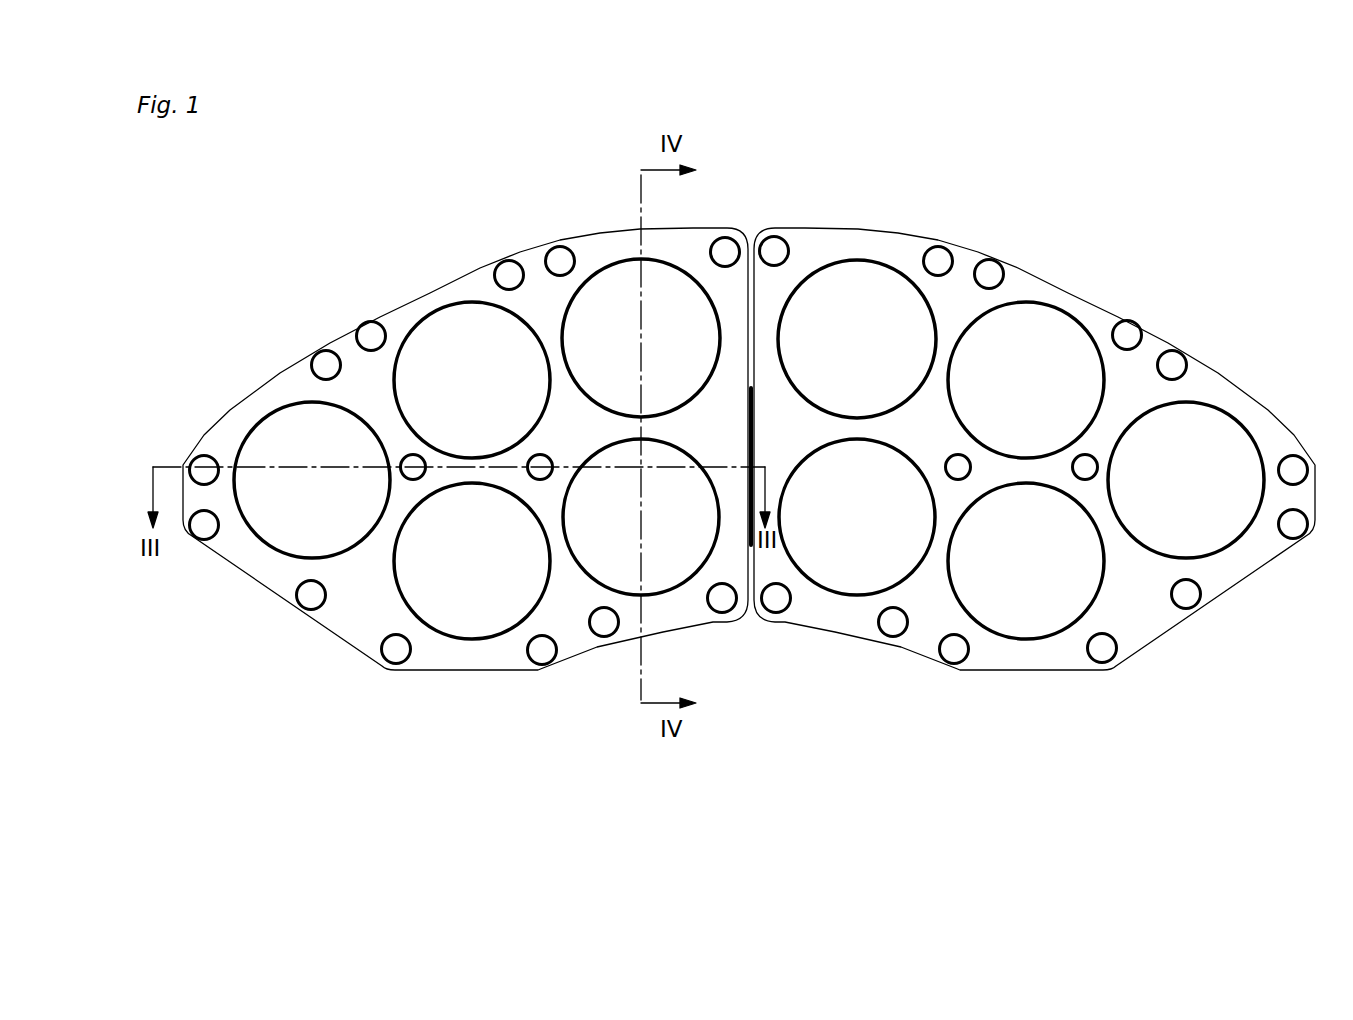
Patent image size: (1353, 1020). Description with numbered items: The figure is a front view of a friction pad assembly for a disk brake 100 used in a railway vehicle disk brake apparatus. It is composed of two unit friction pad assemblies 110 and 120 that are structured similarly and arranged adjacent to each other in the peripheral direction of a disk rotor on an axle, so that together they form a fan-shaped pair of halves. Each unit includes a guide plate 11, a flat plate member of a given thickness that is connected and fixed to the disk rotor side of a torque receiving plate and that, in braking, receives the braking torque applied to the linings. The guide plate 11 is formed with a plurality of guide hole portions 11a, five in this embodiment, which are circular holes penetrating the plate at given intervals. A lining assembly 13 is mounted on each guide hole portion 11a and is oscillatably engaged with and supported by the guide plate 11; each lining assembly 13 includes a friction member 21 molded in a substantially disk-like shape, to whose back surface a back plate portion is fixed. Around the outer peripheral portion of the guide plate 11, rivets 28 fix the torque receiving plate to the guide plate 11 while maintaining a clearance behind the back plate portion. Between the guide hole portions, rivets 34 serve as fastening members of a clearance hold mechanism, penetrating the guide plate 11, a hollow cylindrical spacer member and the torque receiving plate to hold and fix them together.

The friction pad assembly for a disk brake 100 is at (932, 220).
The unit friction pad assembly 110 is at (434, 265).
The unit friction pad assembly 120 is at (1094, 272).
The guide plate 11 is at (749, 419).
The guide hole portion 11a is at (773, 460).
The lining assembly 13 is at (773, 450).
The friction member 21 is at (868, 308).
The rivet 28 is at (324, 362).
The rivet 34 is at (408, 478).